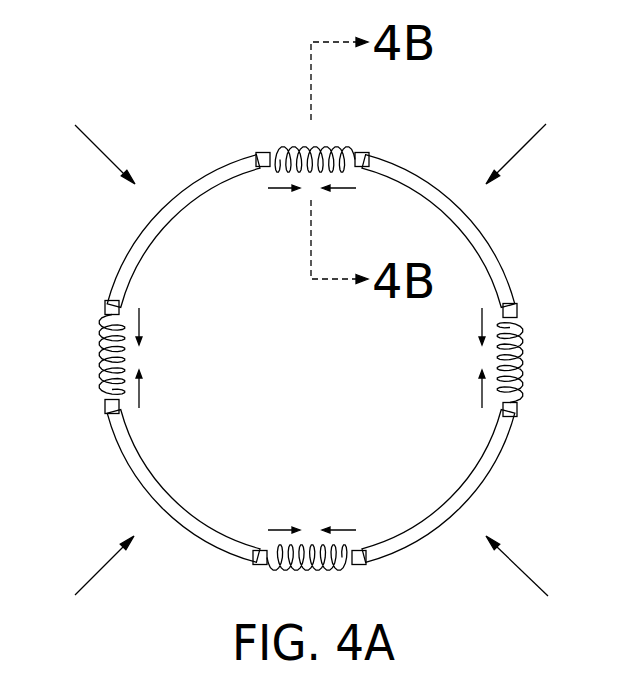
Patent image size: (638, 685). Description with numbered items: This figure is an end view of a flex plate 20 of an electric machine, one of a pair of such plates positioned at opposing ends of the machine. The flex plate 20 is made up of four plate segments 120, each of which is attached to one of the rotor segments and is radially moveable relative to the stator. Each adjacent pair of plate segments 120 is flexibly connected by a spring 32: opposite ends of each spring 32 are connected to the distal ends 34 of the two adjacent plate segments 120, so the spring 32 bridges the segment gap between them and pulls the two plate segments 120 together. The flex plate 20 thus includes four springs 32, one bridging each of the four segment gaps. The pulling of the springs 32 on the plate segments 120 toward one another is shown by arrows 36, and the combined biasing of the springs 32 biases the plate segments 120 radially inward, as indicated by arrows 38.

The flex plate 20 is at (311, 362).
The spring 32 is at (312, 147).
The distal ends 34 is at (262, 156).
The arrows 36 is at (277, 189).
The arrows 38 is at (92, 143).
The plate segments 120 is at (150, 232).